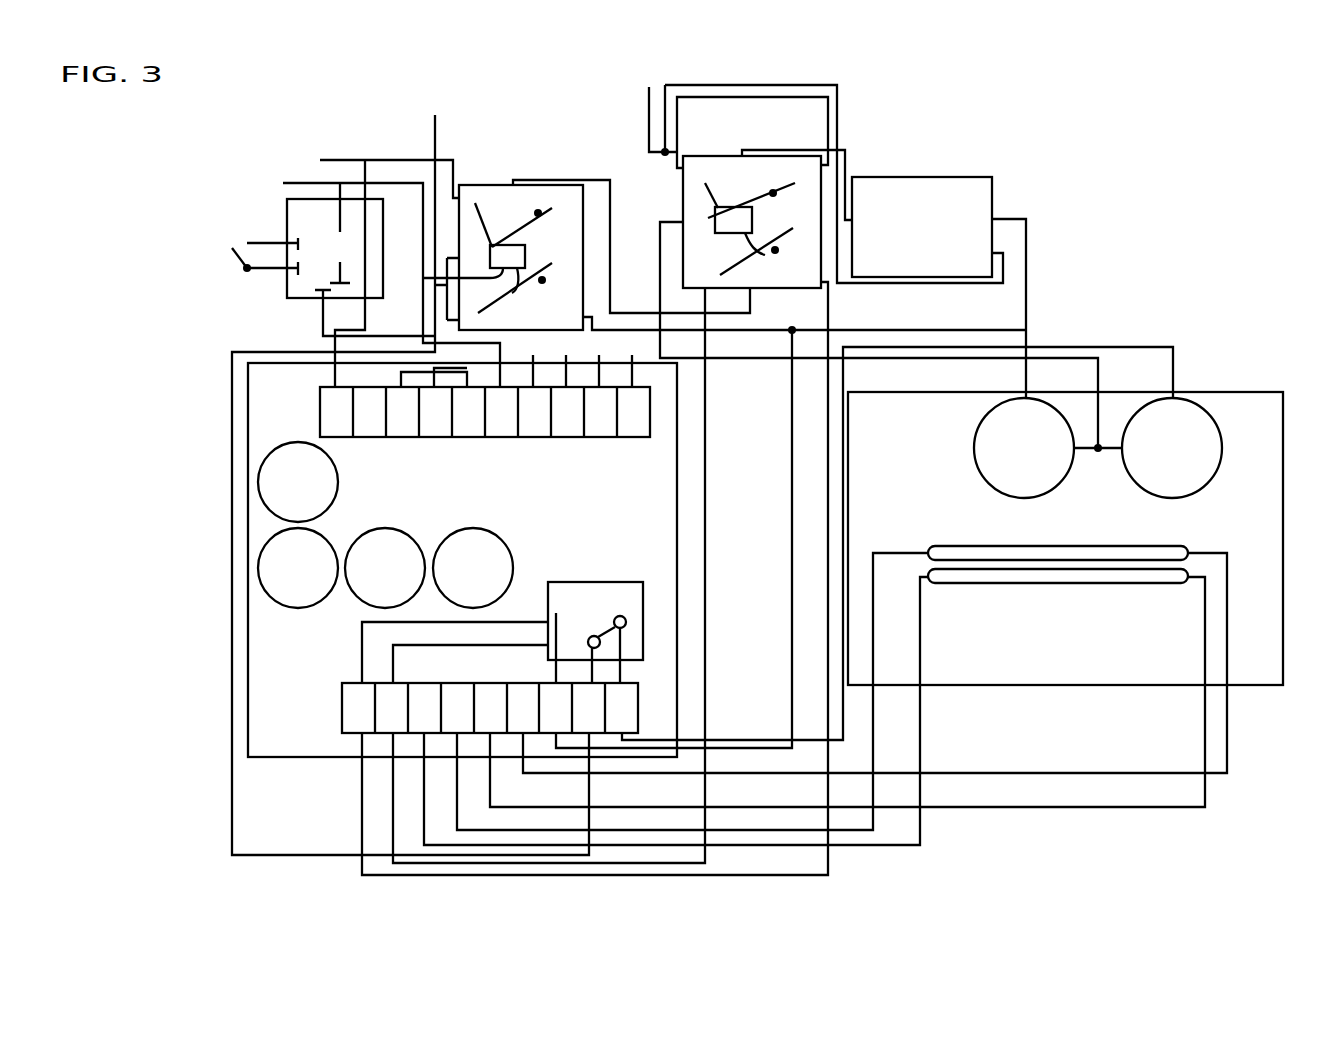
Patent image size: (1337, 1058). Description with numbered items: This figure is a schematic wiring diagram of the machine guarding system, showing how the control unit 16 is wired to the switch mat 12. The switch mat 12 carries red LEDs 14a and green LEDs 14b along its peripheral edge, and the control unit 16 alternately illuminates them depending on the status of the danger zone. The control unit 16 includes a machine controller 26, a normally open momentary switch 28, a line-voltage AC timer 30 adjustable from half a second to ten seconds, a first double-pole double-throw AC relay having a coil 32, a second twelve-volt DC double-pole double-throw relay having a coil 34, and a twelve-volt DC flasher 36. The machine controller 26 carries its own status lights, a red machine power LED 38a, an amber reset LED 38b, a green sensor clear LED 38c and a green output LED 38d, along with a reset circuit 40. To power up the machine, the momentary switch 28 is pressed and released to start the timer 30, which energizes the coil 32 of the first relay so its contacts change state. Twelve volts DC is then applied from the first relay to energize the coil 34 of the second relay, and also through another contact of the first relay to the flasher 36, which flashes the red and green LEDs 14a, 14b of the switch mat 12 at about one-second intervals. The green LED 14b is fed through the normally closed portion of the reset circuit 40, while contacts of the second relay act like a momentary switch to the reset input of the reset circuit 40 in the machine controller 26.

The switch mat 12 is at (1240, 392).
The red LEDs 14a is at (1055, 408).
The green LEDs 14b is at (1140, 406).
The control unit 16 is at (143, 170).
The machine controller 26 is at (233, 456).
The normally open momentary switch 28 is at (238, 257).
The 115VAC timer 30 is at (287, 282).
The coil 32 is at (435, 278).
The coil 34 is at (733, 235).
The 12 VDC flasher 36 is at (993, 190).
The red "MACHINE POWER" LED 38a is at (505, 540).
The amber "RESET" LED 38b is at (420, 545).
The green "SENSOR CLEAR" LED 38c is at (325, 540).
The green LED indicator 38d is at (338, 472).
The reset circuit 40 is at (633, 582).